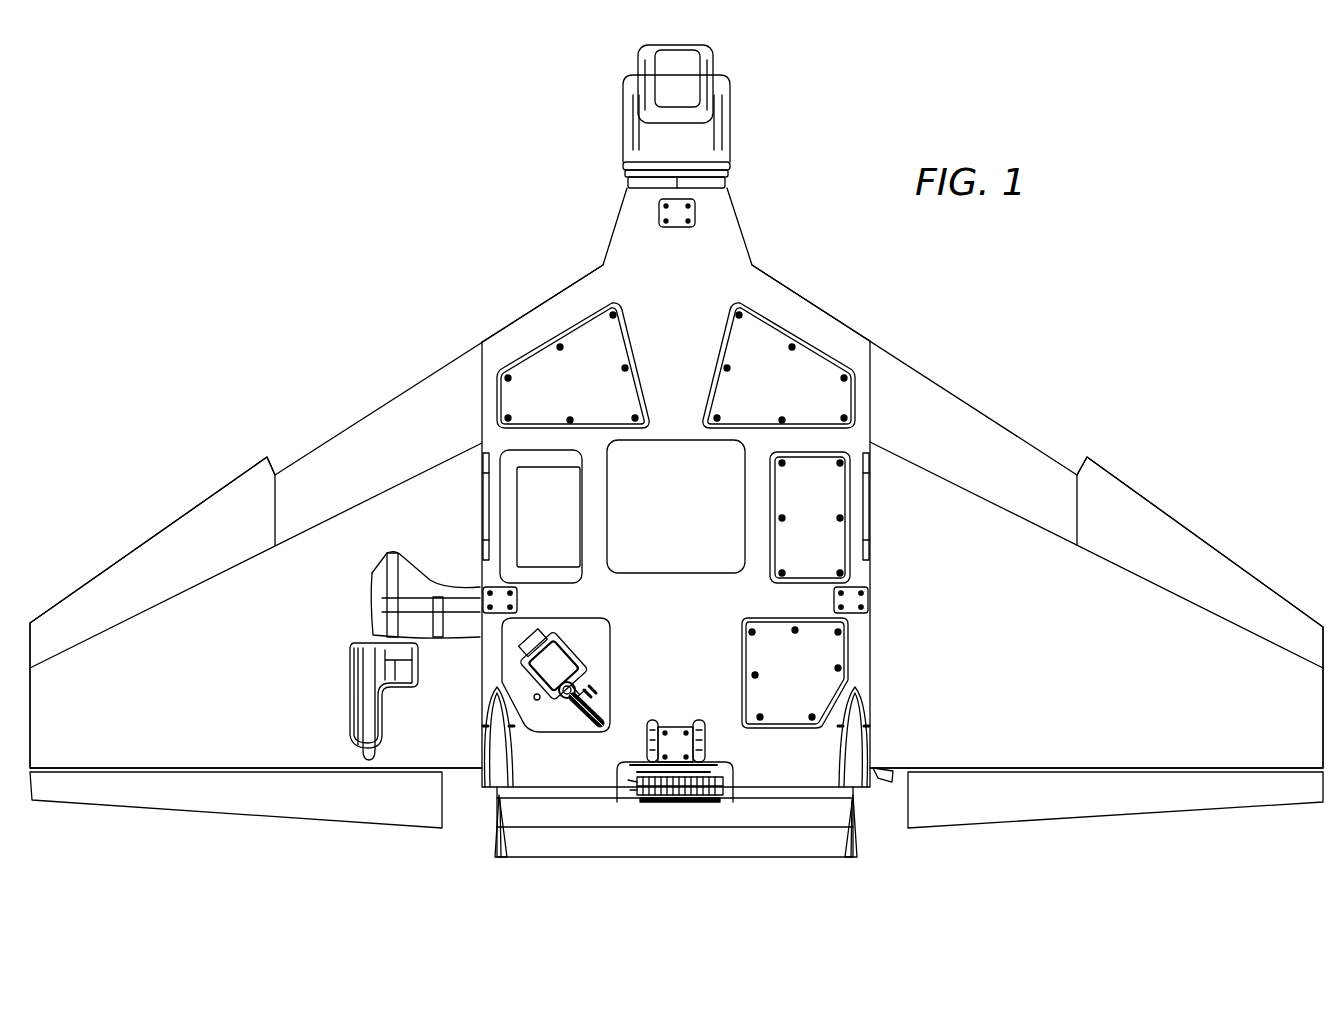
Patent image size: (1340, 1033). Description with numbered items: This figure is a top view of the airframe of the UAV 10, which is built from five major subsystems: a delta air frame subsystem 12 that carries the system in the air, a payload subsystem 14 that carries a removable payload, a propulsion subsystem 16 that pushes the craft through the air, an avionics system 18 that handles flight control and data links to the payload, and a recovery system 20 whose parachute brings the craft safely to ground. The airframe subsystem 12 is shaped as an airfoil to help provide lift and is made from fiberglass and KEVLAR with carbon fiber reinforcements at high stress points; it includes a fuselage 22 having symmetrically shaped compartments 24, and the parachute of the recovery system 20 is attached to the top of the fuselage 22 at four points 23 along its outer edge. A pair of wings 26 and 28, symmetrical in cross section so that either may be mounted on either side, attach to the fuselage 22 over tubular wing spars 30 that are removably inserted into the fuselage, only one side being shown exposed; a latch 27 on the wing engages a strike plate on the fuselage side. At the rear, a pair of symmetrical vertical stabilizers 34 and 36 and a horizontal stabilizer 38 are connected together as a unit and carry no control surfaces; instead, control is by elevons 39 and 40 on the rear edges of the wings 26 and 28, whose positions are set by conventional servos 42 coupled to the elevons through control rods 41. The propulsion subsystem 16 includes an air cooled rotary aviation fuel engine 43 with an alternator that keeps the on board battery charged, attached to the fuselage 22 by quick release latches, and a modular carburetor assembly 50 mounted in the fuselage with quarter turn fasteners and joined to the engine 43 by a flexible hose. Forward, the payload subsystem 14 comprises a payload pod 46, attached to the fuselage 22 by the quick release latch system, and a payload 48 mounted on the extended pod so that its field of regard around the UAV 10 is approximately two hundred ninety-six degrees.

The UAV 10 is at (443, 107).
The delta air frame subsystem 12 is at (488, 243).
The payload subsystem 14 is at (672, 136).
The propulsion subsystem 16 is at (628, 798).
The avionics system 18 is at (487, 440).
The recovery system 20 is at (657, 562).
The fuselage 22 is at (562, 305).
The attachment points 23 is at (482, 477).
The compartments 24 is at (538, 458).
The wing 26 is at (355, 435).
The latch 27 is at (883, 770).
The wing 28 is at (998, 440).
The tubular wing spars 30 is at (418, 587).
The vertical stabilizer 34 is at (487, 795).
The vertical stabilizer 36 is at (860, 795).
The horizontal stabilizer 38 is at (672, 845).
The elevon 39 is at (240, 810).
The elevon 40 is at (1112, 810).
The control rods 41 is at (362, 757).
The servos 42 is at (350, 663).
The engine 43 is at (674, 761).
The payload pod 46 is at (728, 183).
The payload 48 is at (733, 103).
The carburetor assembly 50 is at (515, 664).